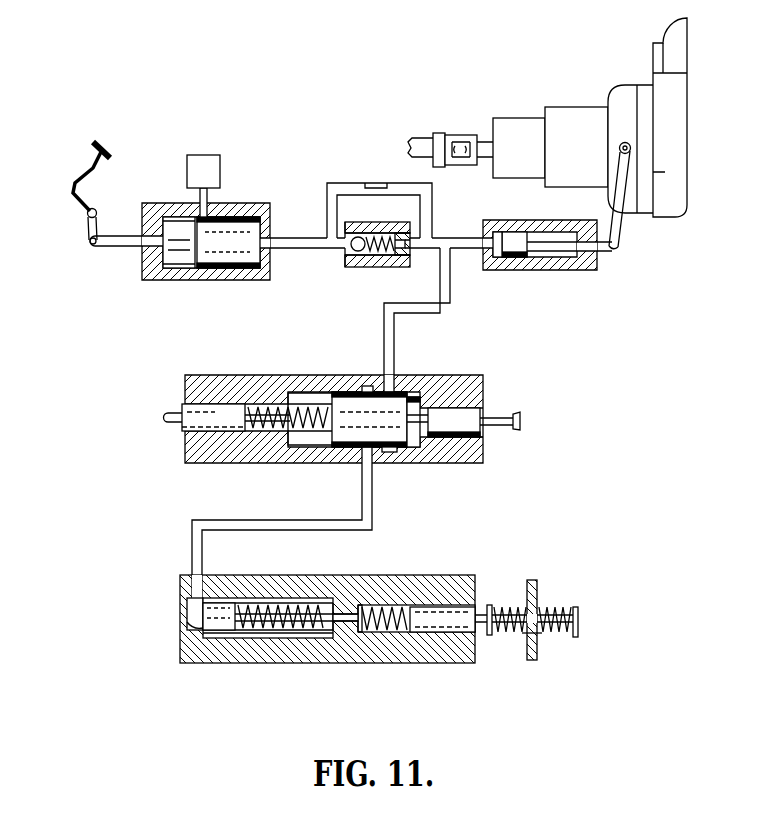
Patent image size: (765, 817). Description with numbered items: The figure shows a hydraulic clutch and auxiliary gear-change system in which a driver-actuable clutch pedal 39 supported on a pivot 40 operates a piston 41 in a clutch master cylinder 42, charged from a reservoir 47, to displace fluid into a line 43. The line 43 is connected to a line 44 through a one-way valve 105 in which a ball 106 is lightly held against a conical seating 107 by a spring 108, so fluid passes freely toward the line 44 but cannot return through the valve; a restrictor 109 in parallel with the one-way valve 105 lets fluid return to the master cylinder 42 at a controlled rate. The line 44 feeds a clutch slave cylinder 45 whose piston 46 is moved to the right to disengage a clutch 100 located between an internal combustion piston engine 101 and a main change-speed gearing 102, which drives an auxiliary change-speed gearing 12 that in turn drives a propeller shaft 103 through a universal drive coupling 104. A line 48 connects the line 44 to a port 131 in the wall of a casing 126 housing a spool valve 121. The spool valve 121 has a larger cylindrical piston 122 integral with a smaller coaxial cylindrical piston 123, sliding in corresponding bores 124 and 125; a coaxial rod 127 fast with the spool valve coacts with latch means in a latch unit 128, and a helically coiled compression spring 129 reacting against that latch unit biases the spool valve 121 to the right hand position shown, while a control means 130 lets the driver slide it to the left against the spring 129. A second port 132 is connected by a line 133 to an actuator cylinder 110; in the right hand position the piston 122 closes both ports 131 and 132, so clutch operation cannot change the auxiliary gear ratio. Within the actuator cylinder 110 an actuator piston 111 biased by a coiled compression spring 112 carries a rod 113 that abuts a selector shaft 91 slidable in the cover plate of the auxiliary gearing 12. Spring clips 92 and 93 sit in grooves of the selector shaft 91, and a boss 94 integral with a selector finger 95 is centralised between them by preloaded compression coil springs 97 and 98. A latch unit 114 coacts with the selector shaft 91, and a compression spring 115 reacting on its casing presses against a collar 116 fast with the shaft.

The auxiliary change-speed gearing 12 is at (515, 127).
The clutch pedal 39 is at (108, 152).
The pivot 40 is at (91, 216).
The piston 41 is at (177, 223).
The clutch master cylinder 42 is at (237, 227).
The line 43 is at (292, 242).
The line 44 is at (465, 242).
The clutch slave cylinder 45 is at (497, 237).
The piston 46 is at (514, 238).
The reservoir 47 is at (208, 163).
The line 48 is at (445, 295).
The selector shaft 91 is at (374, 609).
The spring clip 92 is at (490, 614).
The spring clip 93 is at (578, 620).
The boss 94 is at (541, 634).
The selector finger 95 is at (532, 661).
The compression coil spring 97 is at (507, 634).
The compression coil spring 98 is at (557, 612).
The clutch 100 is at (625, 102).
The internal combustion piston engine 101 is at (663, 163).
The main change-speed gearing 102 is at (570, 123).
The propeller shaft 103 is at (420, 147).
The universal drive coupling 104 is at (462, 137).
The one-way valve 105 is at (374, 284).
The ball 106 is at (353, 248).
The conical seating 107 is at (362, 257).
The spring 108 is at (393, 258).
The restrictor 109 is at (375, 187).
The actuator cylinder 110 is at (187, 603).
The actuator piston 111 is at (227, 622).
The coiled compression spring 112 is at (257, 630).
The rod 113 is at (295, 621).
The latch unit 114 is at (455, 621).
The compression spring 115 is at (393, 629).
The collar 116 is at (372, 624).
The spool valve 121 is at (413, 414).
The cylindrical piston 122 is at (370, 427).
The cylindrical piston 123 is at (476, 433).
The bore 124 is at (413, 448).
The bore 125 is at (463, 424).
The casing 126 is at (282, 453).
The rod 127 is at (323, 420).
The latch unit 128 is at (208, 422).
The compression spring 129 is at (250, 430).
The control means 130 is at (517, 420).
The port 131 is at (400, 391).
The port 132 is at (367, 386).
The line 133 is at (192, 545).